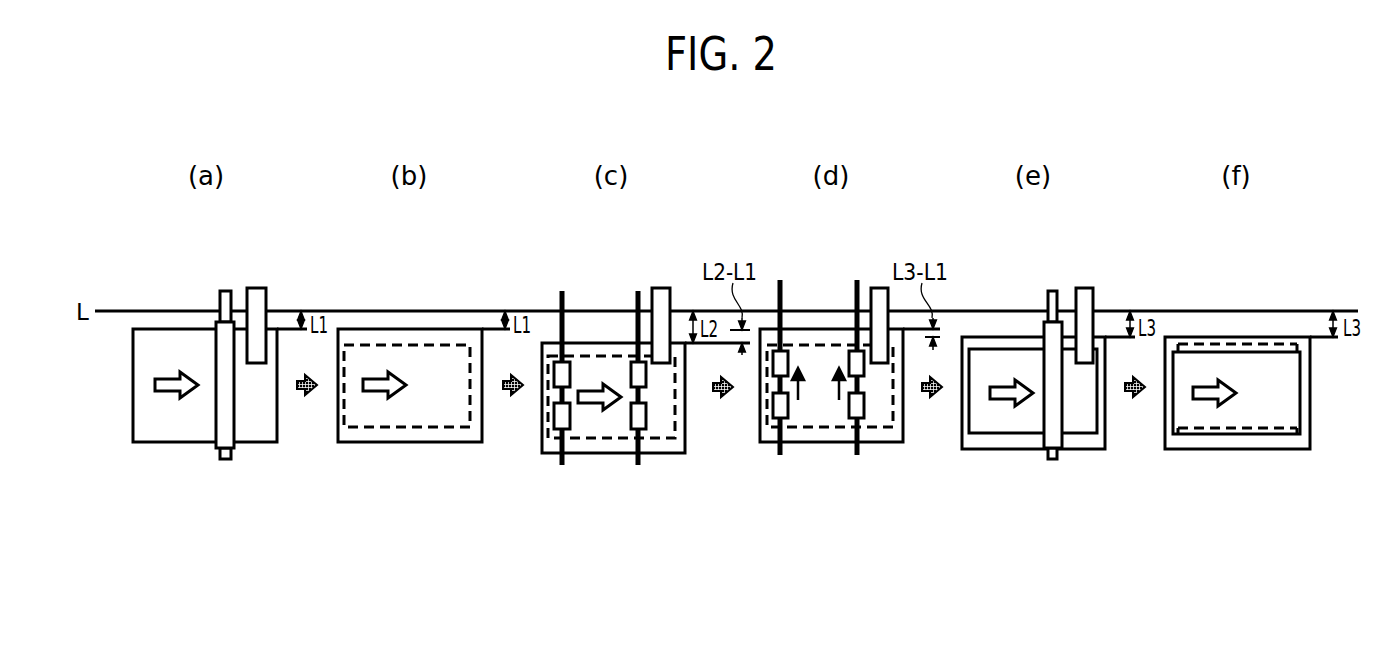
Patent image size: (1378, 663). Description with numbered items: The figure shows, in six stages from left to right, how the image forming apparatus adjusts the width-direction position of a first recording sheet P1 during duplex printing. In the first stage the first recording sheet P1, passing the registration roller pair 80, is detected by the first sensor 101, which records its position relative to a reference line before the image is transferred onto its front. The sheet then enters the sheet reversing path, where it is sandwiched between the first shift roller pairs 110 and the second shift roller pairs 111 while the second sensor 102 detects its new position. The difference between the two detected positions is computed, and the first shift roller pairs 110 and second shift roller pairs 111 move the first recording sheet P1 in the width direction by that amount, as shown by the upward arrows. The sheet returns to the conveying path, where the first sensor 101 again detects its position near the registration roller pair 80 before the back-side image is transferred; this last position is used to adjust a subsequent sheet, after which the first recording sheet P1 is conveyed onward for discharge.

The registration roller pair 80 is at (220, 299).
The first sensor 101 is at (257, 287).
The second sensor 102 is at (662, 287).
The first shift roller pairs 110 is at (558, 464).
The second shift roller pairs 111 is at (637, 464).
The first recording sheet P1 is at (170, 443).